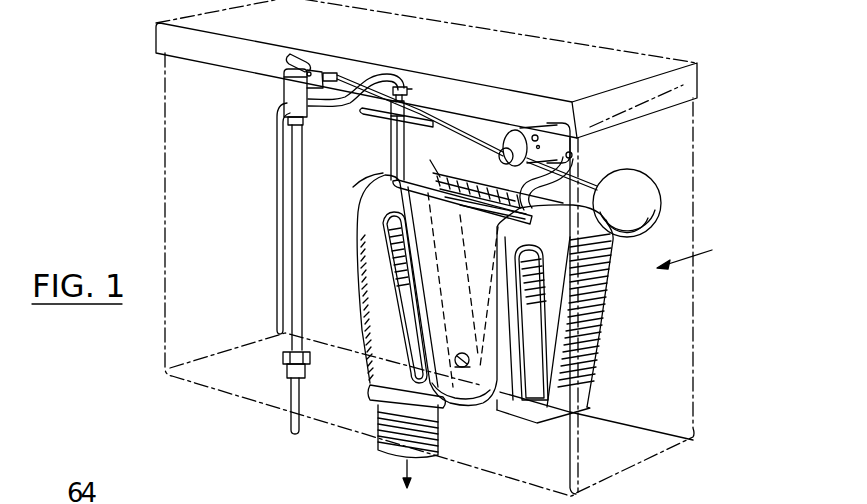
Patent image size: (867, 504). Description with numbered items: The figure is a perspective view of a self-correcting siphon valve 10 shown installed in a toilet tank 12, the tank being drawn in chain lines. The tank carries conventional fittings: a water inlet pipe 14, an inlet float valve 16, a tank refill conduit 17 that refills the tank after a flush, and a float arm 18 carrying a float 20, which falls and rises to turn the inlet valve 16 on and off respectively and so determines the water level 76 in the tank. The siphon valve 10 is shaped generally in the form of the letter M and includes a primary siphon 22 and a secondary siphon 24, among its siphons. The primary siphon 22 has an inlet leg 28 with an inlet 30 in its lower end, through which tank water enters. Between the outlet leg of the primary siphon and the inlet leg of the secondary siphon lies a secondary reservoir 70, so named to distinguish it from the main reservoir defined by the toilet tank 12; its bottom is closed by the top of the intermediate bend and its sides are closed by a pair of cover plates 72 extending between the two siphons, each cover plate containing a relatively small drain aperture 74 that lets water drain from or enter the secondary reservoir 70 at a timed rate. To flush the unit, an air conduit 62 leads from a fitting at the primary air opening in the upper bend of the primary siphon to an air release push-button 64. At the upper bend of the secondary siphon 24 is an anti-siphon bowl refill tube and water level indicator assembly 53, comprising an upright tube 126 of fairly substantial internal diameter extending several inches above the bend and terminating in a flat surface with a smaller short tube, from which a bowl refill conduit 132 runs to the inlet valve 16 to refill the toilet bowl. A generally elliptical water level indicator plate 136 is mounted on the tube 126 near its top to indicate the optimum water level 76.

The self-correcting siphon valve 10 is at (699, 252).
The toilet tank 12 is at (695, 303).
The water inlet pipe 14 is at (290, 423).
The inlet float valve 16 is at (283, 88).
The tank refill conduit 17 is at (277, 222).
The float arm 18 is at (350, 83).
The float 20 is at (633, 180).
The primary siphon 22 is at (590, 327).
The secondary siphon 24 is at (383, 270).
The inlet leg 28 is at (602, 280).
The inlet 30 is at (513, 420).
The anti-siphon bowl refill tube and water level indicator assembly 53 is at (373, 133).
The air conduit 62 is at (577, 163).
The air release push-button 64 is at (510, 133).
The secondary reservoir 70 is at (473, 187).
The cover plates 72 is at (431, 153).
The drain aperture 74 is at (466, 405).
The water level 76 is at (459, 351).
The upright tube 126 is at (346, 189).
The bowl refill conduit 132 is at (383, 77).
The water level indicator plate 136 is at (370, 117).